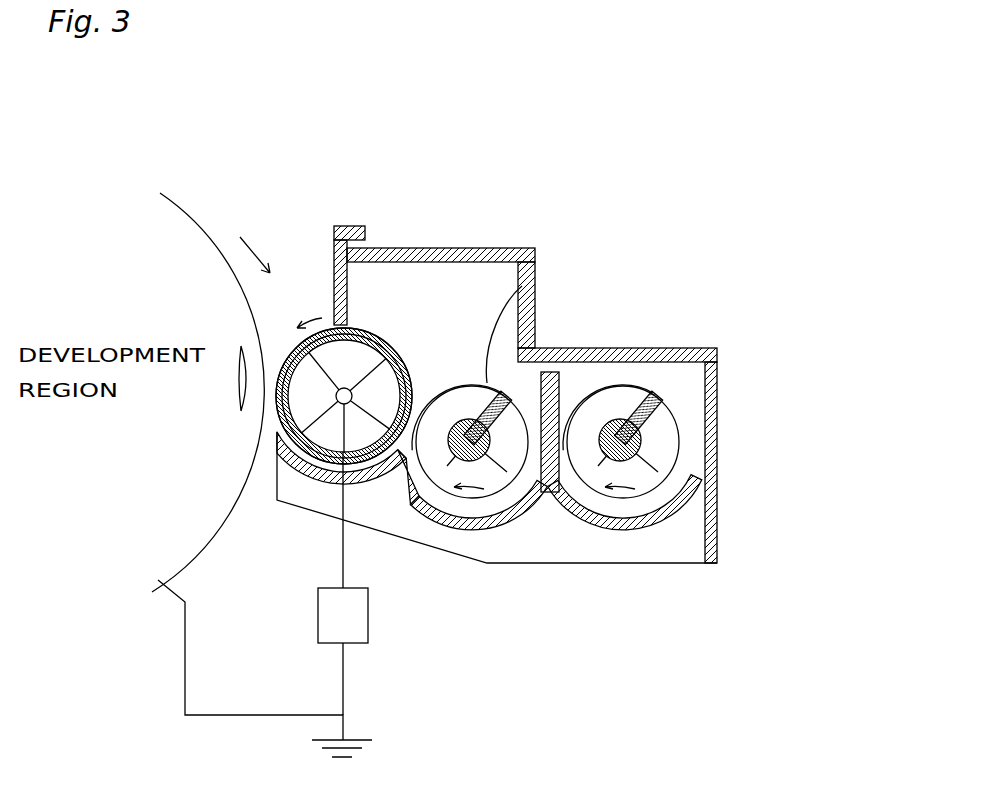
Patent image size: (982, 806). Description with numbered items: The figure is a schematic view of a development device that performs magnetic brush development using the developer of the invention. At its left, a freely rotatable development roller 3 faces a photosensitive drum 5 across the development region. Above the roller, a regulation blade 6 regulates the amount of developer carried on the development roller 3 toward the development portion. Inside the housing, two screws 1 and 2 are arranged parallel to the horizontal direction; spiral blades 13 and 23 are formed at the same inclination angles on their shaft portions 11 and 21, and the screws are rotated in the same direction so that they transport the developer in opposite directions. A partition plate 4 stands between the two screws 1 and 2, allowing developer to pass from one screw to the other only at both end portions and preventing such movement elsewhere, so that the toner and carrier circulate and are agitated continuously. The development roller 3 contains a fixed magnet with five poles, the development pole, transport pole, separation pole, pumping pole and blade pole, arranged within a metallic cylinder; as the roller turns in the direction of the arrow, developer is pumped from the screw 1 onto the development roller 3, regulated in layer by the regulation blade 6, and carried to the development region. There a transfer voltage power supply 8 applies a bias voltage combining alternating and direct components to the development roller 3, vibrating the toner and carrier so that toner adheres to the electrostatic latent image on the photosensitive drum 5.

The screw 1 is at (533, 277).
The screw 2 is at (638, 385).
The development roller 3 is at (388, 340).
The partition plate 4 is at (565, 378).
The photosensitive drum 5 is at (192, 213).
The regulation blade 6 is at (347, 226).
The transfer voltage power supply 8 is at (265, 576).
The shaft portion 11 is at (418, 512).
The spiral blade 13 is at (532, 500).
The shaft portion 21 is at (663, 523).
The spiral blade 23 is at (657, 403).